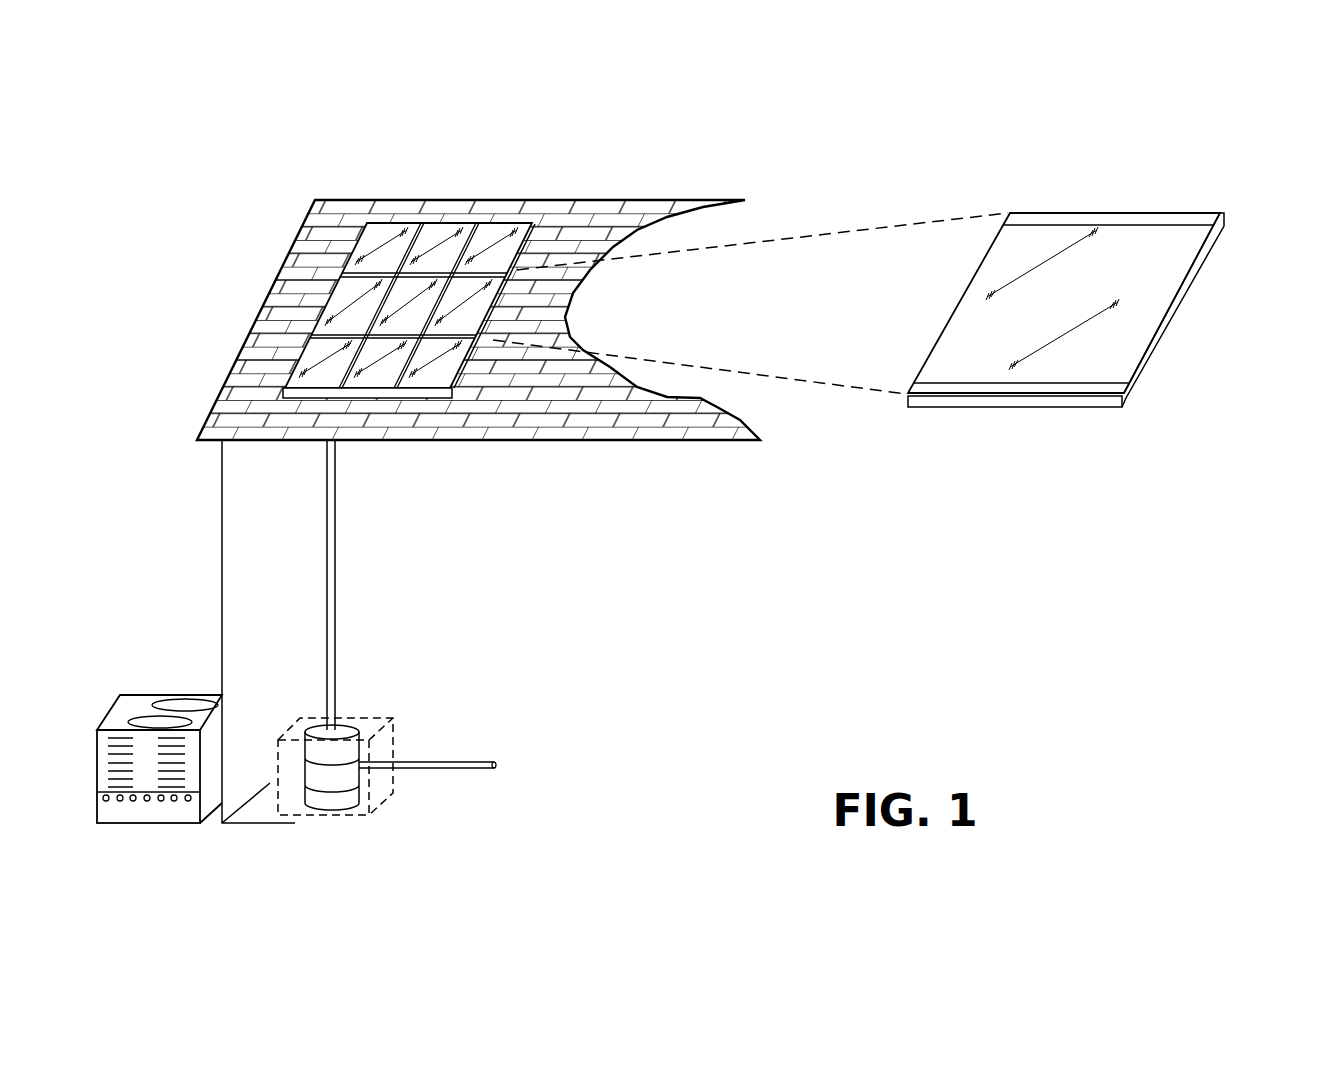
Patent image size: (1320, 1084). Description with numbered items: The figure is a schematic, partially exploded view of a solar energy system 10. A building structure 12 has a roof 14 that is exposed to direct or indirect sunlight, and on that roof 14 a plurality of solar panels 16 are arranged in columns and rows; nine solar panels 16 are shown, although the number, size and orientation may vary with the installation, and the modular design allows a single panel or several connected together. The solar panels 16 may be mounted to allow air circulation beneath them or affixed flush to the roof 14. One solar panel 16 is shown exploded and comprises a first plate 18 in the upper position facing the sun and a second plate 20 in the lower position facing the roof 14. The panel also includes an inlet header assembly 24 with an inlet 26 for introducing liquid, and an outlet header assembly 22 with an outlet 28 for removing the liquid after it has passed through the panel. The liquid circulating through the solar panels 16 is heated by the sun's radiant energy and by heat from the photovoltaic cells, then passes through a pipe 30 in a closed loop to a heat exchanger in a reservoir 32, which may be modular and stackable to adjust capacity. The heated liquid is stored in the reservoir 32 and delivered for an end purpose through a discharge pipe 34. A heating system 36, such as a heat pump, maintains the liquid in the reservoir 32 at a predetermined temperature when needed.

The solar energy system 10 is at (690, 508).
The building structure 12 is at (222, 604).
The roof 14 is at (266, 302).
The solar panel 16 is at (443, 370).
The first plate 18 is at (1153, 262).
The second plate 20 is at (1167, 325).
The outlet header assembly 22 is at (1085, 407).
The inlet header assembly 24 is at (1197, 213).
The inlet 26 is at (1223, 227).
The outlet 28 is at (1125, 400).
The pipe 30 is at (337, 575).
The reservoir 32 is at (352, 728).
The discharge pipe 34 is at (428, 765).
The heating system 36 is at (136, 823).